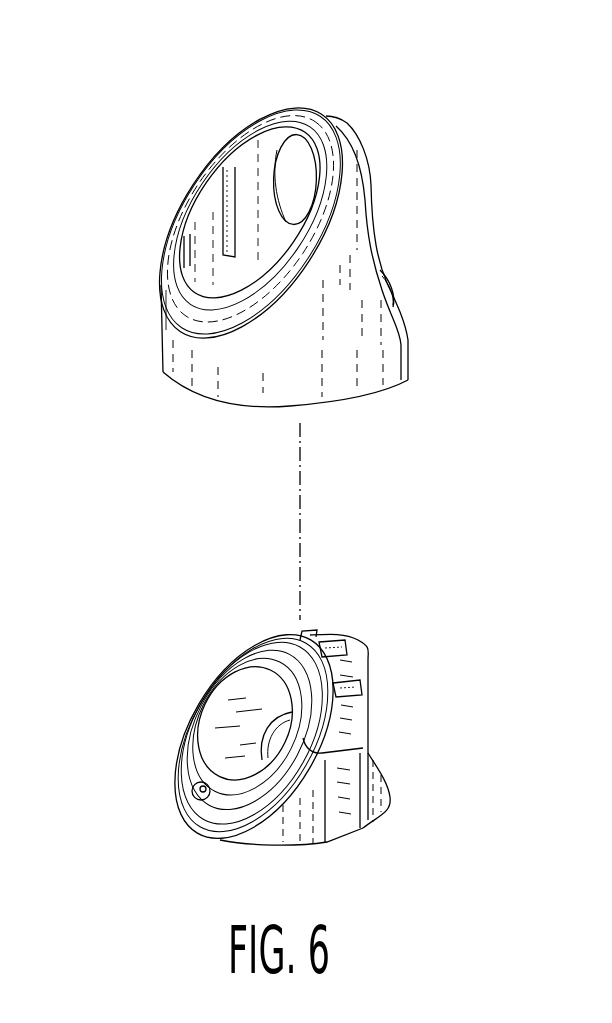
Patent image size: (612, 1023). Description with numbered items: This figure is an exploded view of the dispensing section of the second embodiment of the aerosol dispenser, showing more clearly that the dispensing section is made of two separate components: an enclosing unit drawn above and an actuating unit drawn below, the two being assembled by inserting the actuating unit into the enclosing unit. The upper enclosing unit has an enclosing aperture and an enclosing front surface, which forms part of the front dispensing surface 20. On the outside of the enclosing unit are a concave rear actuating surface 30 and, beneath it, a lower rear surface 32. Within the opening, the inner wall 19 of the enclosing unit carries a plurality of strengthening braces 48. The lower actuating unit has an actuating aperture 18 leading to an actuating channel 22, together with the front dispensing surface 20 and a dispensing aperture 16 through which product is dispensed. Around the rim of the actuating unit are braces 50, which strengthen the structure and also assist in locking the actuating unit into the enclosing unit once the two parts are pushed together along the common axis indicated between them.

The actuating aperture 18 is at (218, 692).
The inner wall 19 is at (255, 172).
The front dispensing surface 20 is at (186, 762).
The actuating channel 22 is at (220, 717).
The dispensing aperture 16 is at (193, 788).
The concave rear actuating surface 30 is at (360, 212).
The lower rear surface 32 is at (407, 320).
The strengthening braces 48 is at (223, 212).
The braces 50 is at (313, 628).